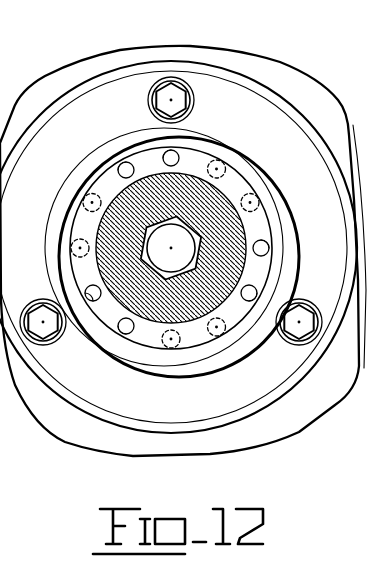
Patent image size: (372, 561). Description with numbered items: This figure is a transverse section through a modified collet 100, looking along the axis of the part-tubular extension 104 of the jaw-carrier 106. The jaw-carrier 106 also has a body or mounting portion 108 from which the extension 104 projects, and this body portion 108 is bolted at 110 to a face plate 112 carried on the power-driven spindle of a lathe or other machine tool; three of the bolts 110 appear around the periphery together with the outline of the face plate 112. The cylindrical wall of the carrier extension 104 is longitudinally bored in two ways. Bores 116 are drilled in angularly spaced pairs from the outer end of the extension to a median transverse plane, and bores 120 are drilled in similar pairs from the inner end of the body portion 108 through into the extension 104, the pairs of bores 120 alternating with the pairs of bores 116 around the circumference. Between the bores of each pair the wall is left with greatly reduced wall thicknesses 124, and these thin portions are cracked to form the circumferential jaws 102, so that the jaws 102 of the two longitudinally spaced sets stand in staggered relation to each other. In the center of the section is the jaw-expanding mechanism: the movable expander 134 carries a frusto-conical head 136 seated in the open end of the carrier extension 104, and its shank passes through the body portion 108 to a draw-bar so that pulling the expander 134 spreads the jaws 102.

The modified collet 100 is at (183, 253).
The circumferential jaws 102 is at (140, 157).
The part-tubular extension 104 is at (141, 355).
The jaw-carrier 106 is at (268, 86).
The body portion 108 is at (78, 102).
The bolts 110 is at (189, 101).
The face plate 112 is at (312, 88).
The bores 116 is at (119, 167).
The bores 120 is at (229, 160).
The reduced wall thicknesses 124 is at (164, 161).
The movable expander 134 is at (240, 263).
The frusto-conical head 136 is at (253, 283).